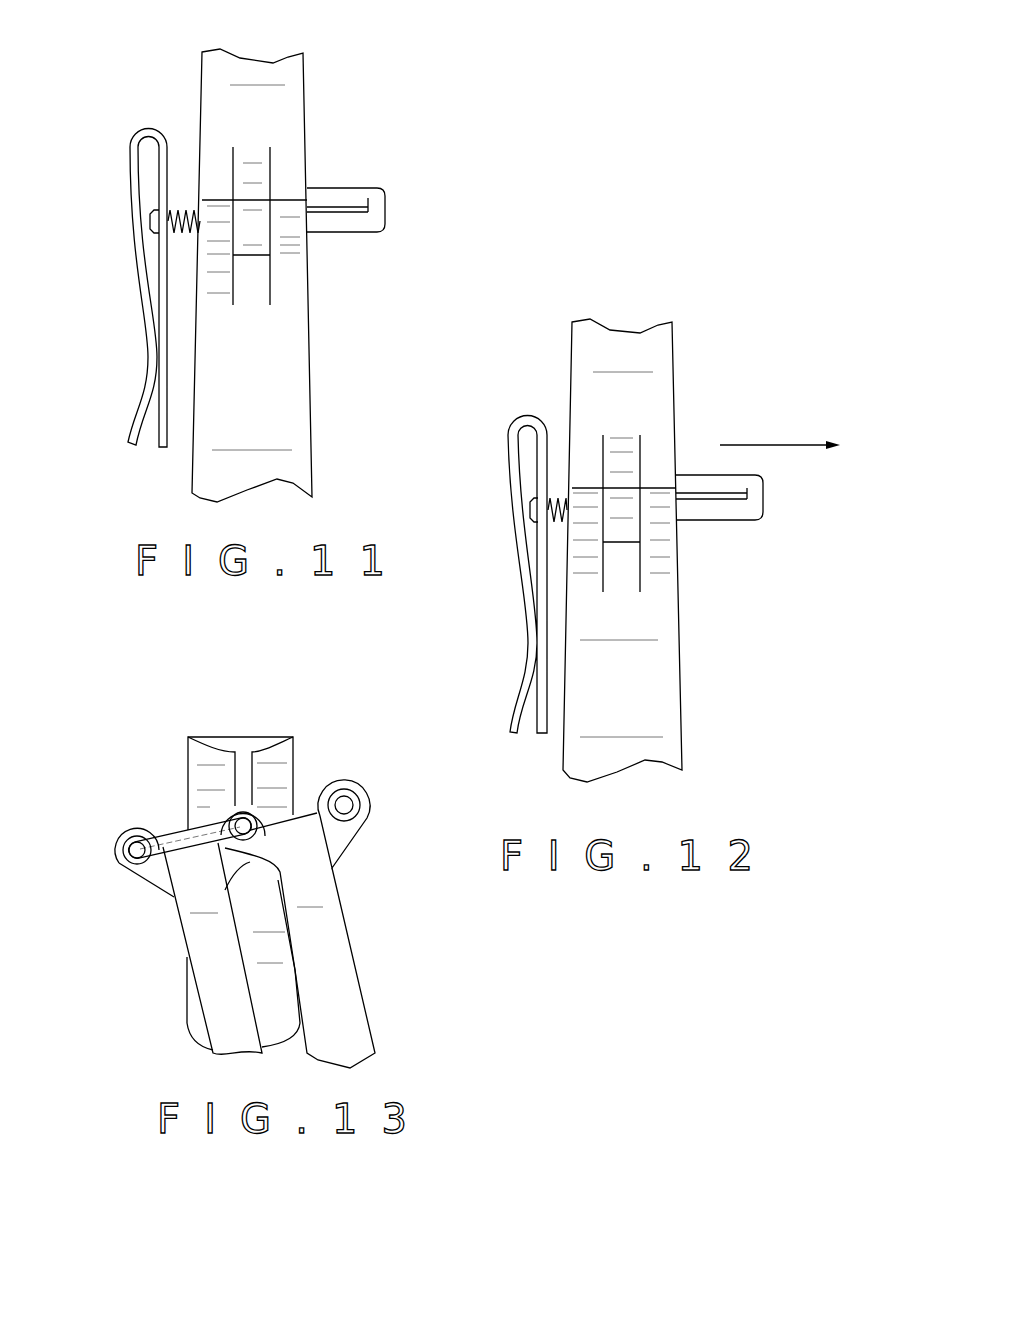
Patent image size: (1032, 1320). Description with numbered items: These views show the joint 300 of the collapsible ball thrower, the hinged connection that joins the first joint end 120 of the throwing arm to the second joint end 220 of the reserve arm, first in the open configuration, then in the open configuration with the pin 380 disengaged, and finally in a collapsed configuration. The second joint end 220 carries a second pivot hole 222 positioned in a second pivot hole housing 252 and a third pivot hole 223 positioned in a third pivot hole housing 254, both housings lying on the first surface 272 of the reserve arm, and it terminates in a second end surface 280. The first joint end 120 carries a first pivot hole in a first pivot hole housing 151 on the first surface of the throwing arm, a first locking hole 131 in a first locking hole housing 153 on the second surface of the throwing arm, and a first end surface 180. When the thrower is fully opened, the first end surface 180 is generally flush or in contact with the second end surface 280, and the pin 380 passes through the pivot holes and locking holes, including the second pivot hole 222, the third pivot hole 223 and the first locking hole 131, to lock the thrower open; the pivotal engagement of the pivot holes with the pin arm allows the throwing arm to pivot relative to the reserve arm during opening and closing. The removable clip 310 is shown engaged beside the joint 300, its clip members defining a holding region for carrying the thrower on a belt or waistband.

In FIG. 11, the first joint end 120 is at (303, 97).
In FIG. 12, the first joint end 120 is at (673, 422).
In FIG. 13, the first joint end 120 is at (310, 860).
In FIG. 11, the first pivot hole housing 151 is at (253, 173).
In FIG. 12, the first pivot hole housing 151 is at (622, 462).
In FIG. 11, the joint 300 is at (377, 124).
In FIG. 12, the joint 300 is at (795, 500).
In FIG. 13, the joint 300 is at (109, 793).
In FIG. 11, the clip 310 is at (138, 120).
In FIG. 12, the clip 310 is at (532, 405).
In FIG. 11, the pin 380 is at (396, 229).
In FIG. 12, the pin 380 is at (772, 522).
In FIG. 11, the second pivot hole 222 is at (200, 235).
In FIG. 12, the second pivot hole 222 is at (567, 522).
In FIG. 11, the third pivot hole 223 is at (307, 230).
In FIG. 12, the third pivot hole 223 is at (677, 520).
In FIG. 13, the third pivot hole 223 is at (128, 867).
In FIG. 11, the second joint end 220 is at (307, 278).
In FIG. 12, the second joint end 220 is at (610, 657).
In FIG. 13, the second joint end 220 is at (200, 872).
In FIG. 11, the second pivot hole housing 252 is at (218, 272).
In FIG. 12, the second pivot hole housing 252 is at (590, 572).
In FIG. 11, the third pivot hole housing 254 is at (295, 295).
In FIG. 12, the third pivot hole housing 254 is at (658, 575).
In FIG. 13, the third pivot hole housing 254 is at (135, 885).
In FIG. 11, the first surface 272 is at (287, 395).
In FIG. 12, the first surface 272 is at (667, 680).
In FIG. 13, the second end surface 280 is at (171, 823).
In FIG. 13, the first end surface 180 is at (305, 810).
In FIG. 13, the first locking hole 131 is at (348, 792).
In FIG. 13, the first locking hole housing 153 is at (367, 822).